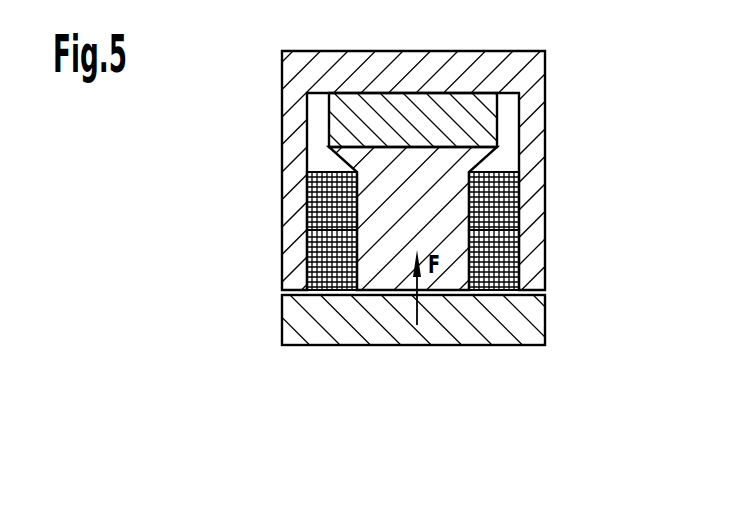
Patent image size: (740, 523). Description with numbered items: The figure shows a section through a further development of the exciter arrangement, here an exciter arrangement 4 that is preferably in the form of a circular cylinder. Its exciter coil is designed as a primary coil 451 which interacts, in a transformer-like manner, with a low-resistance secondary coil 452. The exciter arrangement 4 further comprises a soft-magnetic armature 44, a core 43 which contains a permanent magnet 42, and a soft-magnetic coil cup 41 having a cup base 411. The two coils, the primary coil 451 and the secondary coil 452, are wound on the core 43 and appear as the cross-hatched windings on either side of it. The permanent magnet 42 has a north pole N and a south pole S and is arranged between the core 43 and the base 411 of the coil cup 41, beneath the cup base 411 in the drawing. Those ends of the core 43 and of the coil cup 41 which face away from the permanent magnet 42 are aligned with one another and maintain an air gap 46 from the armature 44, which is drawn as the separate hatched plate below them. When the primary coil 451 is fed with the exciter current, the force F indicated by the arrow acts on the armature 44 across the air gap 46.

The exciter arrangement 4 is at (430, 22).
The coil cup 41 is at (283, 160).
The cup base 411 is at (298, 60).
The permanent magnet 42 is at (487, 113).
The core 43 is at (450, 157).
The armature 44 is at (480, 333).
The primary coil 451 is at (508, 198).
The secondary coil 452 is at (518, 265).
The air gap 46 is at (382, 290).